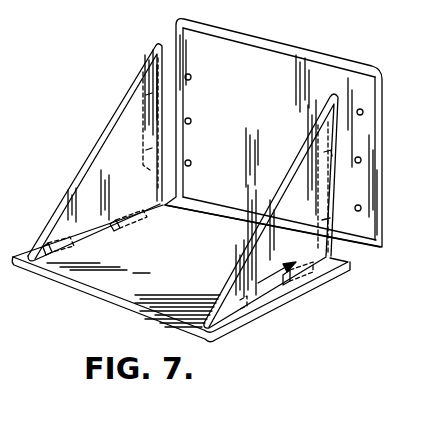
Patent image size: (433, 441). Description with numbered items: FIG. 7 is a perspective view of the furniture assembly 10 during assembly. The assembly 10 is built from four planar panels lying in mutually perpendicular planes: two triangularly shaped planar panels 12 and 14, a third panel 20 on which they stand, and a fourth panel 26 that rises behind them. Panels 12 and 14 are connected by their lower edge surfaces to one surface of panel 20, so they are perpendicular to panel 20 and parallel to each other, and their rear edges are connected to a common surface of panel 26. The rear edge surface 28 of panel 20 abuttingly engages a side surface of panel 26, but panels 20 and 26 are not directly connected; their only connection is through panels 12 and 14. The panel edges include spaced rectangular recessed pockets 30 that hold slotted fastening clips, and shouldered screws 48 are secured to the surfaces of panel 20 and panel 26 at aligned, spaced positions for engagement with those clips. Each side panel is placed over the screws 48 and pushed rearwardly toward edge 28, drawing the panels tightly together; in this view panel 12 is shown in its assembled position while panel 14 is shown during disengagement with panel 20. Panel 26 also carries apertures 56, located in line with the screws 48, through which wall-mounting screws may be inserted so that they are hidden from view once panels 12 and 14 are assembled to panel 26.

The furniture assembly 10 is at (399, 52).
The triangularly shaped planar panel 12 is at (87, 187).
The triangularly shaped planar panel 14 is at (288, 238).
The third panel 20 is at (182, 295).
The fourth panel 26 is at (278, 111).
The rear edge surface 28 is at (206, 217).
The recessed pockets 30 is at (142, 145).
The shouldered screws 48 is at (192, 80).
The apertures 56 is at (192, 123).